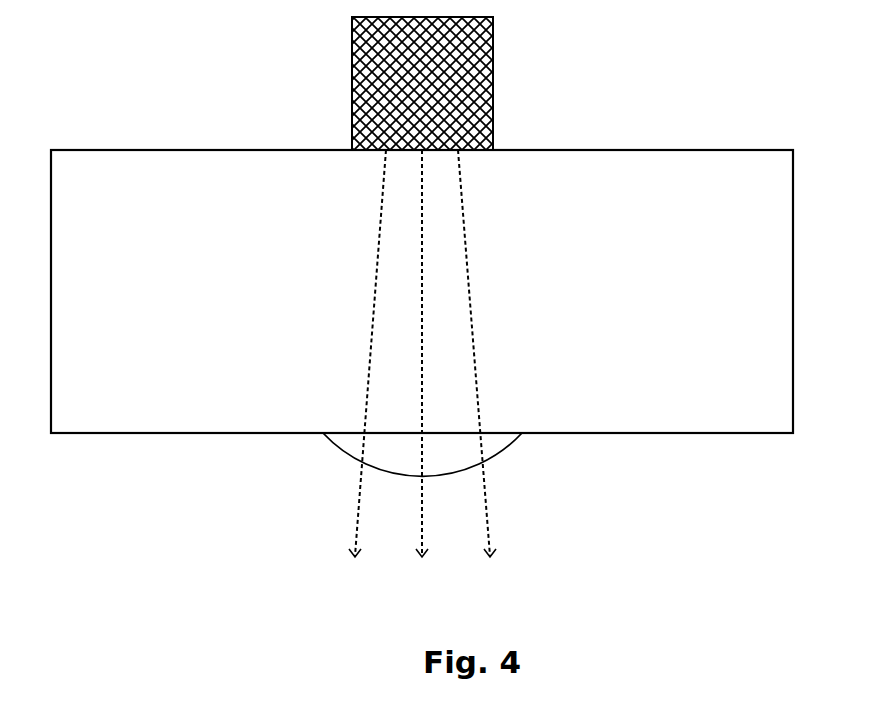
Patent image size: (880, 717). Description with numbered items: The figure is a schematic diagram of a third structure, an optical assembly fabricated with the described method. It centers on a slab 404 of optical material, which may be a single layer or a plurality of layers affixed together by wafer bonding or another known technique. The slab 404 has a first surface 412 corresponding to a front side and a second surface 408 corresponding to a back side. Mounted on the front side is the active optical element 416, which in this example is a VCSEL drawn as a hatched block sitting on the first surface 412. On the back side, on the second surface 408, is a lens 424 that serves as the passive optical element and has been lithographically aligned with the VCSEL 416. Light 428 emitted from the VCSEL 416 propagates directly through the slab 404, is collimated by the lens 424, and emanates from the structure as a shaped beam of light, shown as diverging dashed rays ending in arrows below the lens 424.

The slab 404 is at (152, 400).
The second surface 408 is at (176, 433).
The first surface 412 is at (192, 150).
The active optical element 416 is at (493, 134).
The lens 424 is at (513, 452).
The light 428 is at (512, 565).